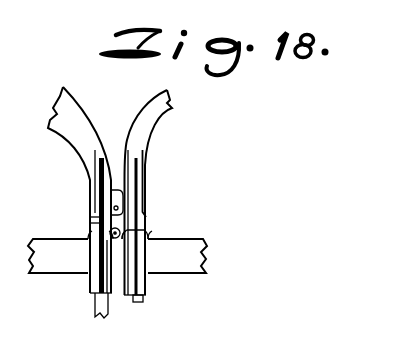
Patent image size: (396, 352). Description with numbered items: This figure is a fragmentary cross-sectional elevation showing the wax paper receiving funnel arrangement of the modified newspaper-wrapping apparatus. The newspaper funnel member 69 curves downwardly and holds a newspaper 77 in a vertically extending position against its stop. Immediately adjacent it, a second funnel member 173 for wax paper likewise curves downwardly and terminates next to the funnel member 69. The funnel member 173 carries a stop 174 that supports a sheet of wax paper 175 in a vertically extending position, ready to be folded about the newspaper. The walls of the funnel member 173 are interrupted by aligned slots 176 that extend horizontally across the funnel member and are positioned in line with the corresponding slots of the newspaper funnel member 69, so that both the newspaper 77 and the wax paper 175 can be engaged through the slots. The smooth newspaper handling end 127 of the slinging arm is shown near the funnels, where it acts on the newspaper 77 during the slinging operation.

The funnel member 69 is at (83, 97).
The funnel member 173 is at (158, 90).
The sheet of wax paper 175 is at (144, 192).
The aligned slots 176 is at (128, 228).
The newspaper handling end 127 is at (100, 221).
The newspaper 77 is at (103, 232).
The stop 174 is at (134, 302).